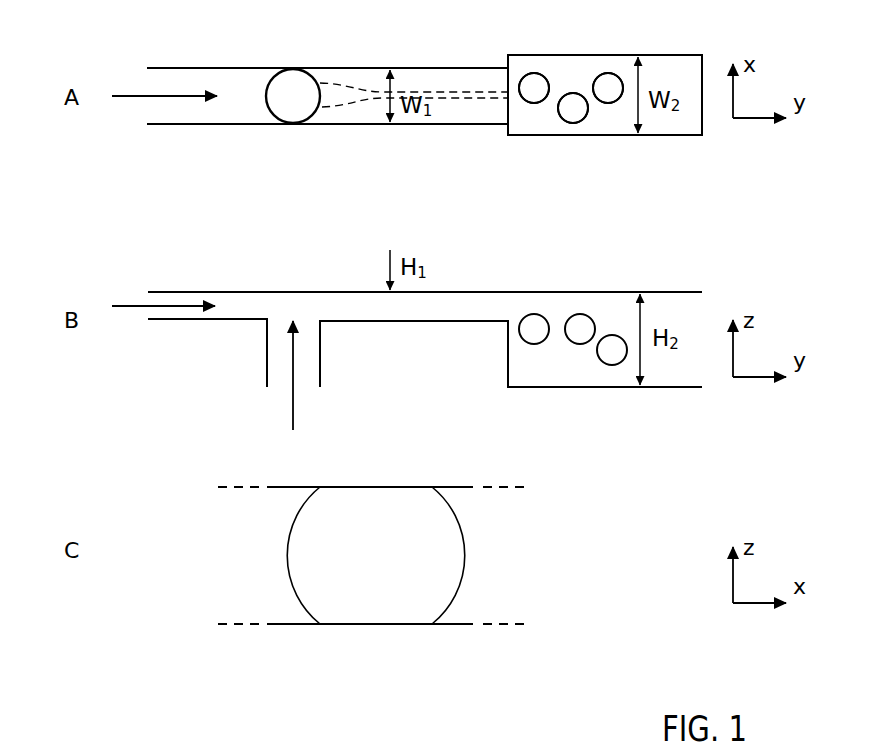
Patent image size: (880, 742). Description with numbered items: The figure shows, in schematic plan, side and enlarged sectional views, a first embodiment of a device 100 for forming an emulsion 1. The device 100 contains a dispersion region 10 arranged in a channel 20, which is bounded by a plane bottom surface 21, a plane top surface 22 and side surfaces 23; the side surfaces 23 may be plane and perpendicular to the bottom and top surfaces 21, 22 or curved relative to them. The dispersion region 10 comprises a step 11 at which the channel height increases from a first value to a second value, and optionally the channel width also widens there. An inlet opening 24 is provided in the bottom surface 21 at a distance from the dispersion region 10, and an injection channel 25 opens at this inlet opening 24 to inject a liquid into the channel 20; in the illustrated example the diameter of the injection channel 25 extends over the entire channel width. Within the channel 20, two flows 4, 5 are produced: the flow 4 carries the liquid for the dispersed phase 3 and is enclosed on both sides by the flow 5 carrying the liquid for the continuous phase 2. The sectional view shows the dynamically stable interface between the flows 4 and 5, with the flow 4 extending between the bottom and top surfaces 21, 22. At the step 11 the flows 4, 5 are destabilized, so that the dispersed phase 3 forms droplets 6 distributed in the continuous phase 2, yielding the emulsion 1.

The device 100 is at (272, 44).
The emulsion 1 is at (583, 68).
The continuous phase 2 is at (625, 122).
The dispersed phase 3 is at (567, 115).
The droplets 6 is at (571, 98).
The flow 4 is at (370, 98).
The flow 5 is at (367, 78).
The dispersion region 10 is at (512, 39).
The step 11 is at (507, 103).
The channel 20 is at (190, 124).
The bottom surface 21 is at (428, 125).
The top surface 22 is at (348, 291).
The side surfaces 23 is at (482, 68).
The inlet opening 24 is at (295, 112).
The injection channel 25 is at (276, 343).